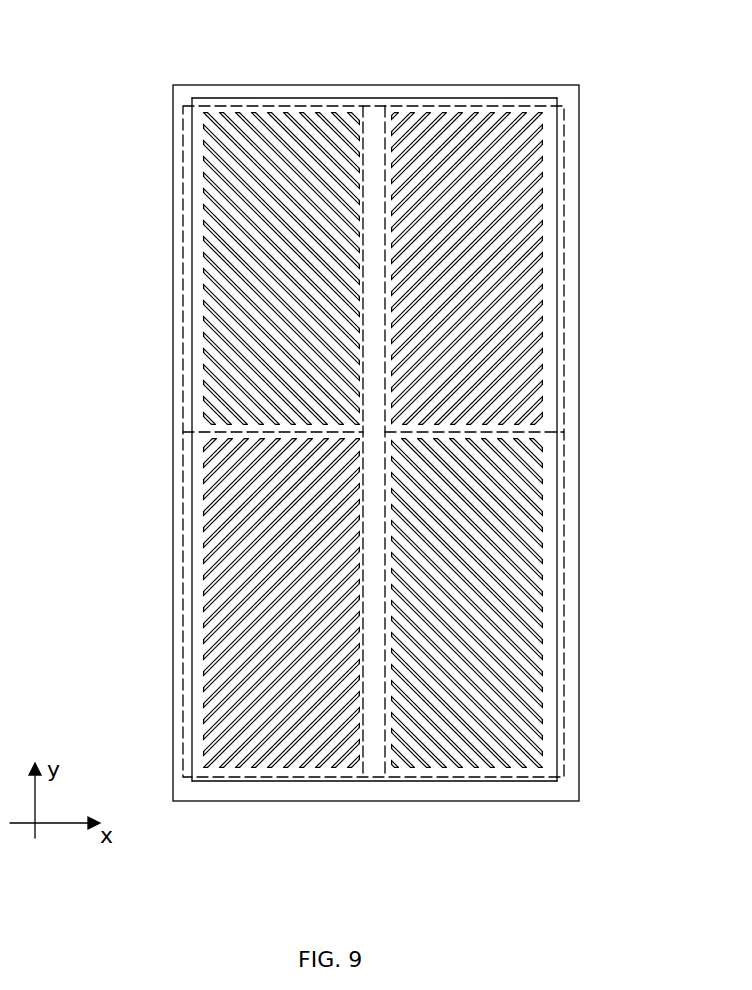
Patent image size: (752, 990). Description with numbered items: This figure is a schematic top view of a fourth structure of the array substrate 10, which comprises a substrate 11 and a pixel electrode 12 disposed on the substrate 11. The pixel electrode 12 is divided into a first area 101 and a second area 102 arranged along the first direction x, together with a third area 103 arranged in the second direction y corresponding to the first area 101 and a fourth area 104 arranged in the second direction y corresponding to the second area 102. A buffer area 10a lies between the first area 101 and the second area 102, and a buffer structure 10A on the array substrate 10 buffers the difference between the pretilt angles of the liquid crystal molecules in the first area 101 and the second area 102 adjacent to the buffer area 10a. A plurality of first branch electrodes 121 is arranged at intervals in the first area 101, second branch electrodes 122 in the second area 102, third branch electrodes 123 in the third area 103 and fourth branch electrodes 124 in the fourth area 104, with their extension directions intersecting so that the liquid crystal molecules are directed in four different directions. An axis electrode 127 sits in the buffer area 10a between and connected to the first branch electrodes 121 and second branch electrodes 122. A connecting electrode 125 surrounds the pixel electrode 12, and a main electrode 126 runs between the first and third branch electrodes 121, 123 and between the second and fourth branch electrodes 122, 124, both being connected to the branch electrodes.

The array substrate 10 is at (120, 70).
The substrate 11 is at (576, 354).
The pixel electrode 12 is at (376, 451).
The first branch electrodes 121 is at (340, 112).
The second branch electrodes 122 is at (418, 116).
The third branch electrodes 123 is at (277, 767).
The fourth branch electrodes 124 is at (443, 763).
The connecting electrode 125 is at (543, 520).
The main electrode 126 is at (520, 427).
The axis electrode 127 is at (388, 800).
The buffer structure 10A is at (372, 213).
The buffer area 10a is at (372, 432).
The first area 101 is at (192, 270).
The second area 102 is at (557, 275).
The third area 103 is at (190, 663).
The fourth area 104 is at (557, 652).